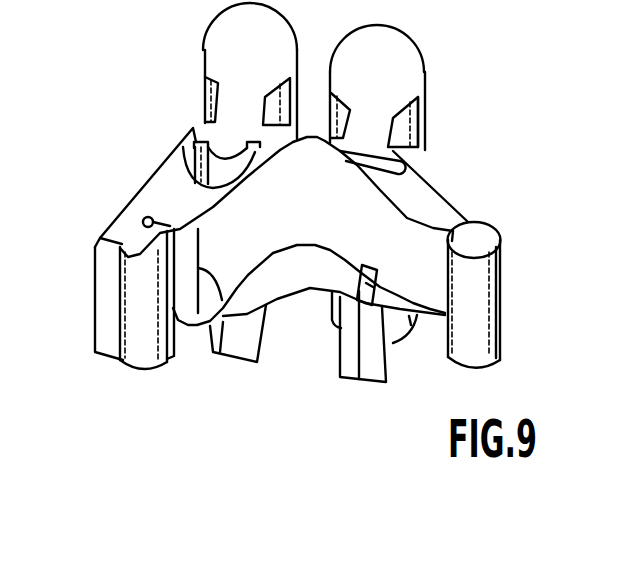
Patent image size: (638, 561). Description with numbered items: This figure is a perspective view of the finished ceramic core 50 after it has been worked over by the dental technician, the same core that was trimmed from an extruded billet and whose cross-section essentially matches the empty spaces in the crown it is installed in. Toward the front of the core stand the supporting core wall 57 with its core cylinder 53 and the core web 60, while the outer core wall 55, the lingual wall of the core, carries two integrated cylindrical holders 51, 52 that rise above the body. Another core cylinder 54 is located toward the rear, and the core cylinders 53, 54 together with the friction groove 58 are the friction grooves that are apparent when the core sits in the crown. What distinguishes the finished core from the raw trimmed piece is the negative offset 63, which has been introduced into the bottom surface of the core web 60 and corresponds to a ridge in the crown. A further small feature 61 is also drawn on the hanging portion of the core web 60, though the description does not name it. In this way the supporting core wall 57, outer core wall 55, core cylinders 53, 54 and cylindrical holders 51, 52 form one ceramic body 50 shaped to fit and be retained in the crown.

The ceramic core 50 is at (104, 394).
The cylindrical holder 51 is at (232, 34).
The cylindrical holder 52 is at (403, 63).
The core cylinder 53 is at (100, 238).
The core cylinder 54 is at (479, 240).
The outer core wall 55 is at (395, 152).
The supporting core wall 57 is at (158, 192).
The friction groove 58 is at (193, 151).
The core web 60 is at (318, 213).
The tab 61 is at (222, 326).
The negative offset 63 is at (364, 300).